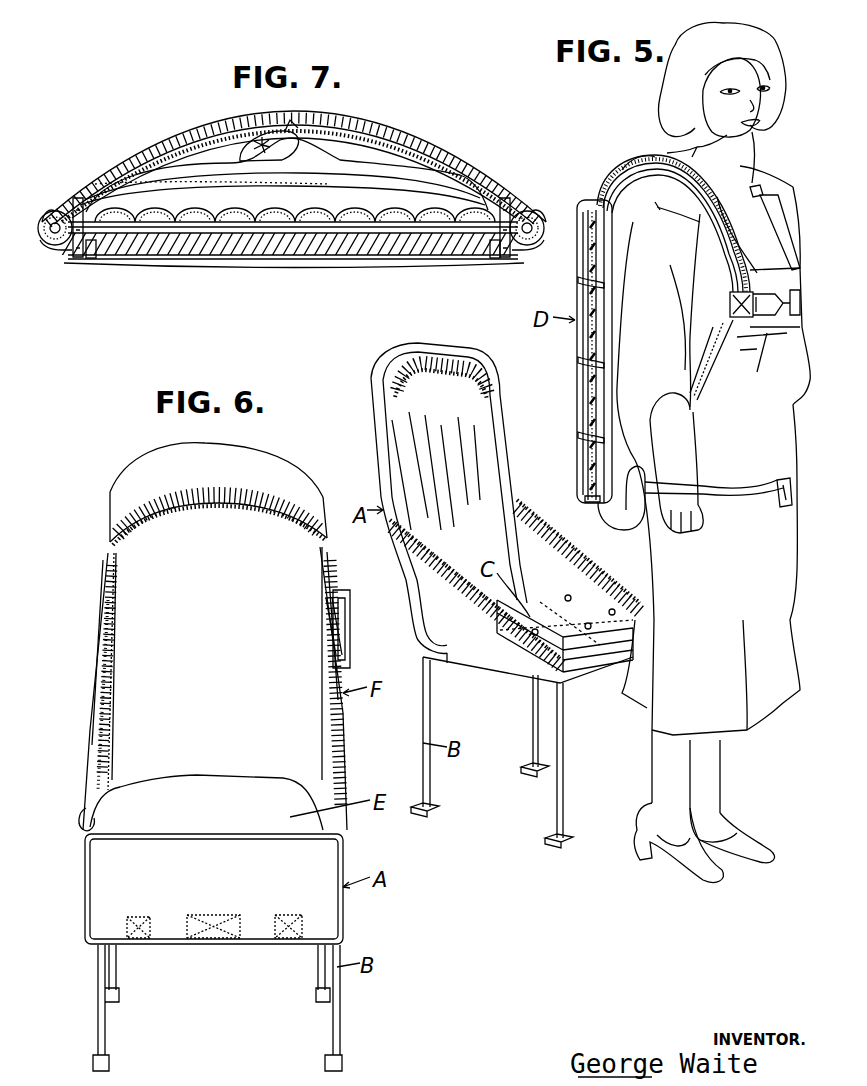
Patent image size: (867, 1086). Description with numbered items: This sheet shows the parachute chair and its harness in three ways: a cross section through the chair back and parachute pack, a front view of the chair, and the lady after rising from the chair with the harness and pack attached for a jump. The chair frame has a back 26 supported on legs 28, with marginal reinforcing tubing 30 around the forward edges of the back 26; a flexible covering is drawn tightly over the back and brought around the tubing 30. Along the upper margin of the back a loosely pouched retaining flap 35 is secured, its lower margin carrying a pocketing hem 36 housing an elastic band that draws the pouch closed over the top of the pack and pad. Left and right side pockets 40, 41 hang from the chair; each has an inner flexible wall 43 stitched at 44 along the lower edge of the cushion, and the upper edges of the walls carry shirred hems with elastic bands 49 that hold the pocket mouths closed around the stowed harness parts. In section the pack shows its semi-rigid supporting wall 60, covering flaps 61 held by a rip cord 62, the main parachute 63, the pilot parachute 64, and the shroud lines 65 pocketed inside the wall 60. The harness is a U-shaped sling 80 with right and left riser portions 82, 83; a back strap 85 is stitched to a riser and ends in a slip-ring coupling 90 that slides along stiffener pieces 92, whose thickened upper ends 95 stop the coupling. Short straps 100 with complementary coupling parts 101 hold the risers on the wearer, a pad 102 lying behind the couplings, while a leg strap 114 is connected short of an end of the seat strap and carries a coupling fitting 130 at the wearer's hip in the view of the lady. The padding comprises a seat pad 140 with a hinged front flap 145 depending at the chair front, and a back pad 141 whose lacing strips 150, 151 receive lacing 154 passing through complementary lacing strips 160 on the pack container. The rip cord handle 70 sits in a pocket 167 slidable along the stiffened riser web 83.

In FIG. 7, the back 26 is at (390, 123).
In FIG. 5, the back 26 is at (473, 483).
In FIG. 6, the legs 28 is at (98, 1013).
In FIG. 7, the marginal reinforcing tubing 30 is at (42, 245).
In FIG. 7, the retaining flap 35 is at (360, 122).
In FIG. 5, the retaining flap 35 is at (467, 373).
In FIG. 6, the retaining flap 35 is at (222, 510).
In FIG. 6, the pocketing hem 36 is at (270, 513).
In FIG. 5, the left pocket 40 is at (567, 577).
In FIG. 6, the left pocket 40 is at (353, 744).
In FIG. 5, the right pocket 41 is at (480, 630).
In FIG. 6, the right pocket 41 is at (77, 747).
In FIG. 6, the inner wall 43 is at (110, 763).
In FIG. 6, the stitching 44 is at (90, 720).
In FIG. 6, the elastic band 49 is at (117, 723).
In FIG. 7, the semi-rigid supporting wall 60 is at (443, 234).
In FIG. 7, the flaps 61 is at (403, 140).
In FIG. 7, the rip cord 62 is at (310, 120).
In FIG. 7, the main parachute 63 is at (430, 187).
In FIG. 7, the pilot parachute 64 is at (297, 153).
In FIG. 7, the shroud lines 65 is at (460, 207).
In FIG. 6, the rip cord handle 70 is at (350, 637).
In FIG. 5, the U-shaped supporting sling 80 is at (709, 409).
In FIG. 5, the right side riser portion 82 is at (724, 327).
In FIG. 6, the right side riser portion 82 is at (112, 610).
In FIG. 6, the left side riser portion 83 is at (327, 710).
In FIG. 5, the back strap 85 is at (583, 362).
In FIG. 5, the metal coupling 90 is at (645, 160).
In FIG. 5, the stiffener pieces 92 is at (733, 253).
In FIG. 5, the upper ends of stiffener pieces 95 is at (637, 160).
In FIG. 5, the straps 100 is at (731, 300).
In FIG. 5, the coupling parts 101 is at (798, 277).
In FIG. 5, the pad 102 is at (760, 360).
In FIG. 5, the strap 114 is at (717, 490).
In FIG. 6, the strap 114 is at (87, 818).
In FIG. 5, the belt buckle 130 is at (727, 513).
In FIG. 6, the seat pad 140 is at (206, 802).
In FIG. 7, the back pad 141 is at (170, 261).
In FIG. 5, the back pad 141 is at (606, 413).
In FIG. 6, the back pad 141 is at (217, 663).
In FIG. 6, the flexible flap 145 is at (107, 898).
In FIG. 7, the lacing strip 150 is at (92, 259).
In FIG. 5, the lacing strip 150 is at (597, 443).
In FIG. 7, the lacing strip 151 is at (495, 260).
In FIG. 5, the lacing 154 is at (594, 475).
In FIG. 7, the complementary lacing strips 160 is at (76, 207).
In FIG. 5, the complementary lacing strips 160 is at (594, 463).
In FIG. 6, the pocket 167 is at (330, 643).